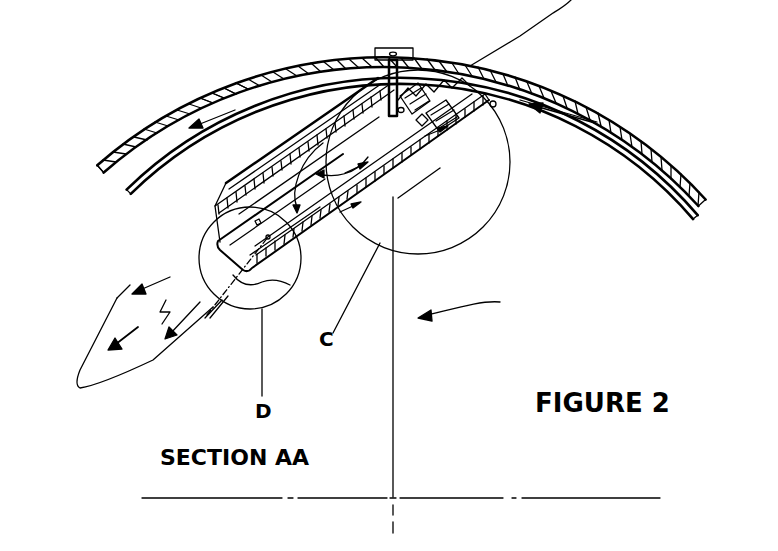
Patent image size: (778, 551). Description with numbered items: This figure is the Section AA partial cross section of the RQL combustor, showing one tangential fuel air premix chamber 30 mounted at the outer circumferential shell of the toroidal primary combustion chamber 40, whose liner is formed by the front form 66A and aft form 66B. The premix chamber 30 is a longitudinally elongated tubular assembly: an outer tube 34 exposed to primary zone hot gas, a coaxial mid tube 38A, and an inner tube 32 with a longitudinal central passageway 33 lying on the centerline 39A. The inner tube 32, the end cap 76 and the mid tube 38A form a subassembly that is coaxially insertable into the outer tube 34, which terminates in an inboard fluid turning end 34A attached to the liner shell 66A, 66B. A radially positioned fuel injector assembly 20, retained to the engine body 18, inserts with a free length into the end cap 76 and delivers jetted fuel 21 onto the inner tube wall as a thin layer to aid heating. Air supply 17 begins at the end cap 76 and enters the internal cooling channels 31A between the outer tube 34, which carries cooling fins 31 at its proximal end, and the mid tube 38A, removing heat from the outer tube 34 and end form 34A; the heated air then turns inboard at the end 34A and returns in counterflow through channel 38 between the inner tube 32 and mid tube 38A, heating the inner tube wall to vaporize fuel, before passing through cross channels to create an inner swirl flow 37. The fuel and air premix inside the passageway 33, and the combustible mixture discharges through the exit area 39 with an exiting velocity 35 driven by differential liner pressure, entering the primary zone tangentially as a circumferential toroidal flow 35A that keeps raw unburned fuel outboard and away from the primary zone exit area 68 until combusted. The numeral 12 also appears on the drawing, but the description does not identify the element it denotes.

The aircraft fuselage 12 is at (135, 86).
The air supply 17 is at (190, 113).
The engine body 18 is at (541, 88).
The fuel injector assembly 20 is at (366, 42).
The jetted fuel 21 is at (412, 108).
The fuel air premix chamber 30 is at (465, 182).
The cooling fins 31 is at (452, 80).
The internal cooling channels 31A is at (403, 170).
The inner tube 32 is at (227, 195).
The longitudinal central passageway 33 is at (240, 223).
The outer tube 34 is at (340, 227).
The inboard fluid turning end 34A is at (255, 275).
The exiting velocity 35 is at (134, 337).
The circumferential toroidal flow 35A is at (480, 308).
The inner swirl flow 37 is at (460, 96).
The channel 38 is at (300, 75).
The mid tube 38A is at (137, 250).
The exit area 39 is at (210, 318).
The centerline 39A is at (205, 318).
The primary combustion chamber 40 is at (616, 142).
The front form 66A is at (285, 84).
The aft form 66B is at (210, 67).
The primary zone exit area 68 is at (650, 178).
The end cap 76 is at (399, 96).